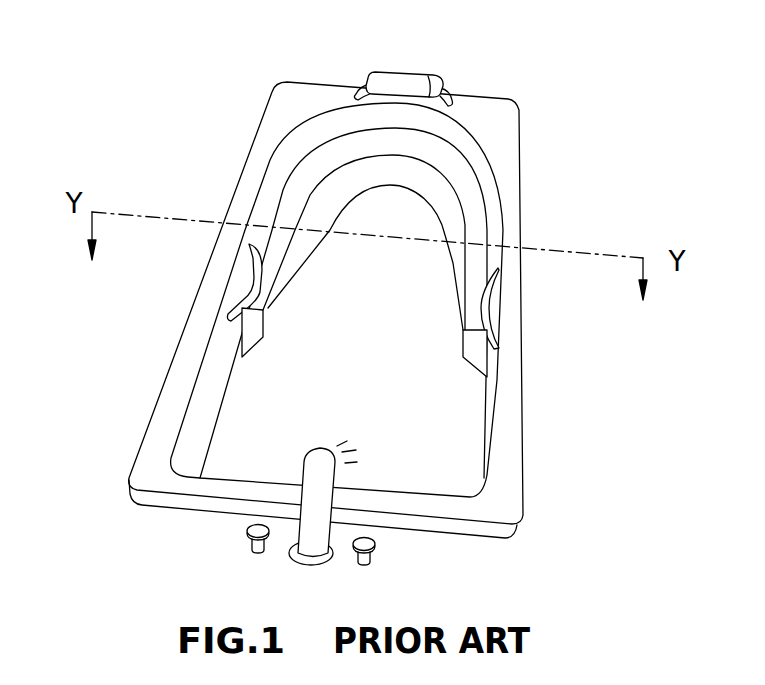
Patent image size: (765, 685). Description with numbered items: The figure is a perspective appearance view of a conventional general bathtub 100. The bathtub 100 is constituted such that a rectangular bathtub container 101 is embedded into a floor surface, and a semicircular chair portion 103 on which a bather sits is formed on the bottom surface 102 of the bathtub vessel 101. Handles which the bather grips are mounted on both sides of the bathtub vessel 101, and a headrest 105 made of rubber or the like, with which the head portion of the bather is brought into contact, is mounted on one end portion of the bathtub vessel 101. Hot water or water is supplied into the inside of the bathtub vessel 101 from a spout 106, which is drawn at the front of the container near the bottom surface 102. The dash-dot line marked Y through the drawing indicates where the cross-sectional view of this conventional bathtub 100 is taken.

The bathtub 100 is at (520, 85).
The bathtub container 101 is at (173, 387).
The bottom surface 102 is at (448, 440).
The chair portion 103 is at (475, 210).
The headrest 105 is at (415, 78).
The spout 106 is at (309, 447).